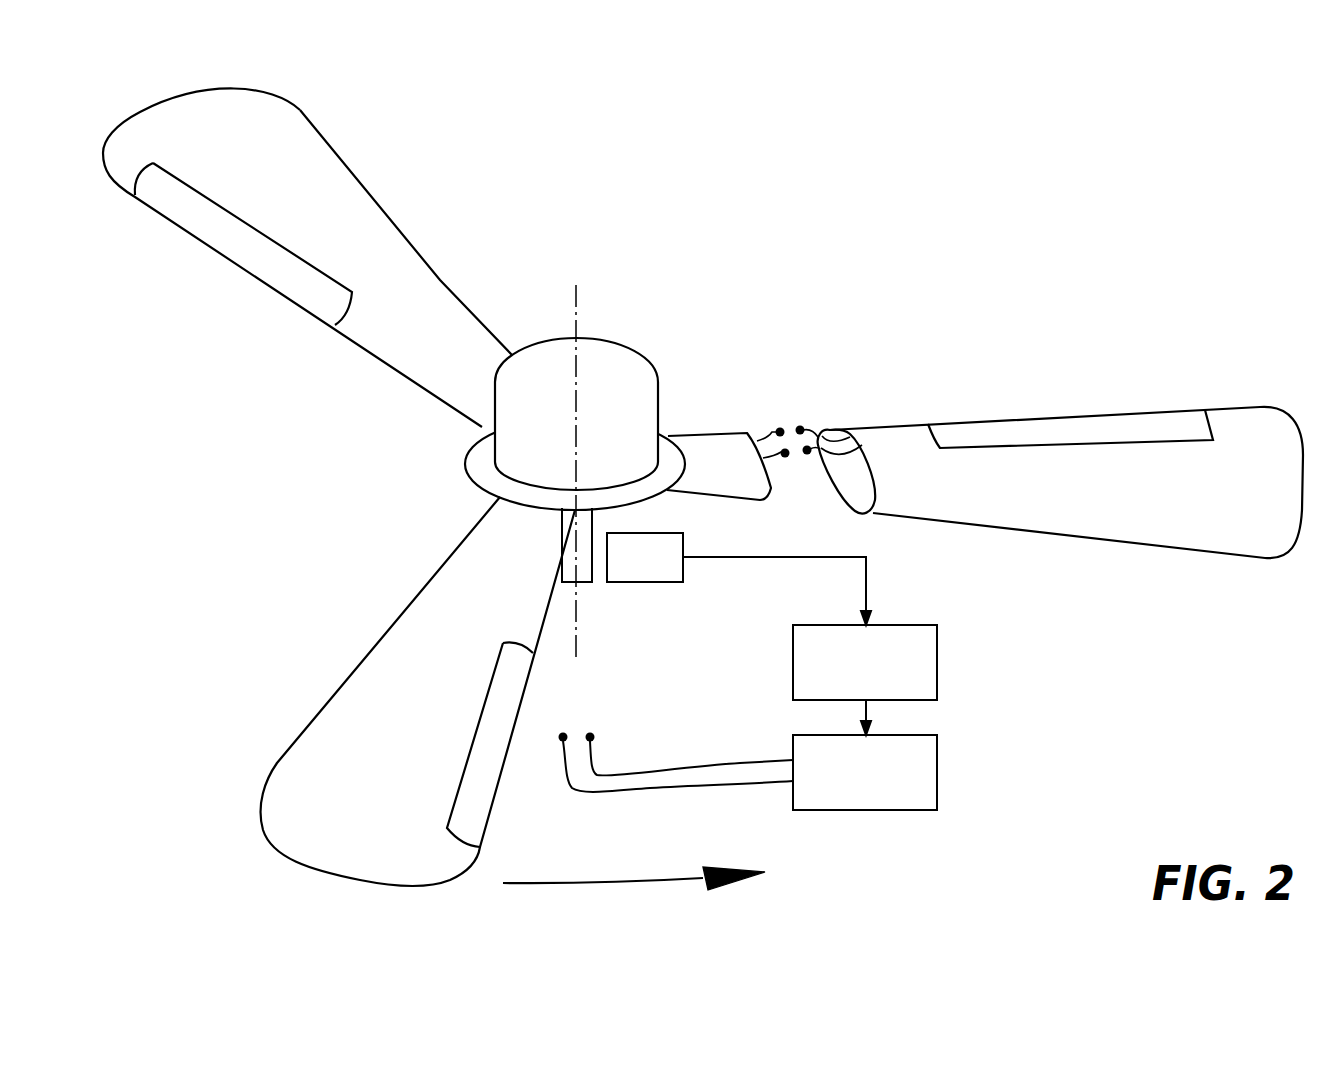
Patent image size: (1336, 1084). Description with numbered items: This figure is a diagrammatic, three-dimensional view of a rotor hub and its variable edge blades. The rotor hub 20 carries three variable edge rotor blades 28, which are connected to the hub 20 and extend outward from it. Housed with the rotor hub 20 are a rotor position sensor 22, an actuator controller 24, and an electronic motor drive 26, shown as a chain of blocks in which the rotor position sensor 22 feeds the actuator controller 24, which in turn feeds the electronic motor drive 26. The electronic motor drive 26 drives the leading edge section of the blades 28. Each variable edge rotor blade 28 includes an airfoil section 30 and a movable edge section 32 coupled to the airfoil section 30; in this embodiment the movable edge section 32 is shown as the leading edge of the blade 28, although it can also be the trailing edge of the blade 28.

The rotor hub 20 is at (641, 326).
The rotor position sensor 22 is at (663, 537).
The actuator controller 24 is at (937, 658).
The electronic motor drive 26 is at (937, 780).
The variable edge rotor blade 28 is at (703, 487).
The airfoil section 30 is at (703, 487).
The movable edge section 32 is at (243, 250).